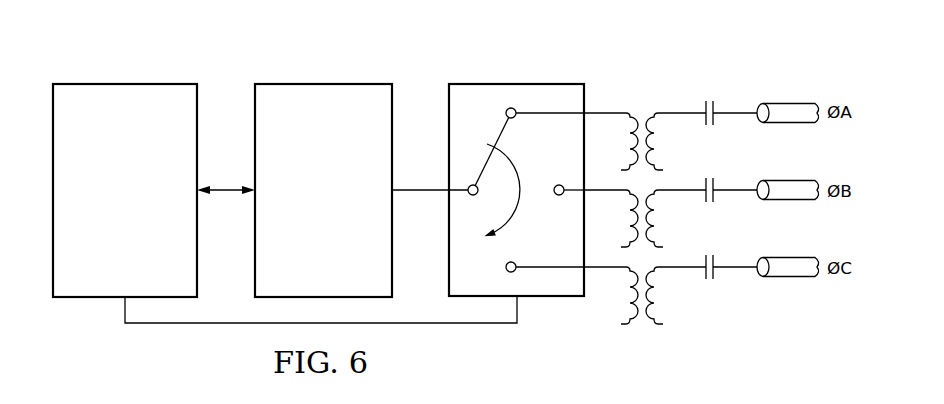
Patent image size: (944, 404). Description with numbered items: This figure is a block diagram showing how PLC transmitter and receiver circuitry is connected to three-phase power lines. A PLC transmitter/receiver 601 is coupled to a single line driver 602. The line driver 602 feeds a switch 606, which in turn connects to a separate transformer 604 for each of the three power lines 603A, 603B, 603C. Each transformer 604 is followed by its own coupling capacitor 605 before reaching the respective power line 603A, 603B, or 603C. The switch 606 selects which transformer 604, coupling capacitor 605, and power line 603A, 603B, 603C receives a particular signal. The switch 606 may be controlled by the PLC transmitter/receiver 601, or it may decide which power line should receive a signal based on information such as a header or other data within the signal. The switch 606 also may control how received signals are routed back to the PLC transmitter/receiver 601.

The PLC transmitter/receiver 601 is at (142, 244).
The line driver 602 is at (342, 218).
The switch 606 is at (527, 83).
The transformer 604 is at (642, 112).
The coupling capacitor 605 is at (708, 97).
The power line 603A is at (789, 103).
The power line 603B is at (789, 180).
The power line 603C is at (790, 277).